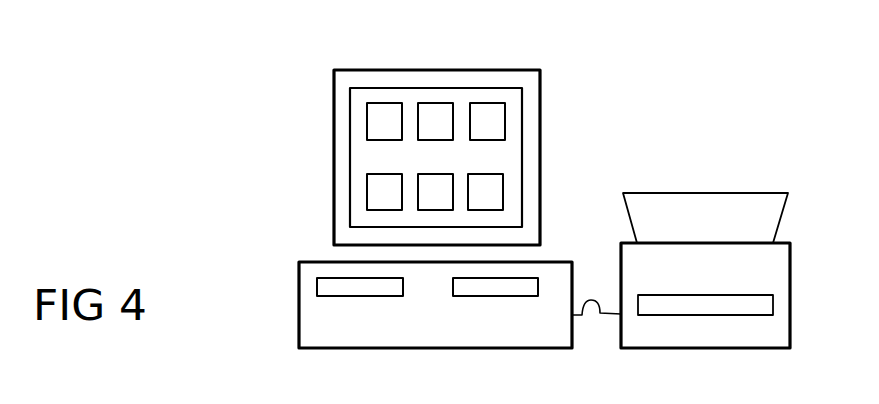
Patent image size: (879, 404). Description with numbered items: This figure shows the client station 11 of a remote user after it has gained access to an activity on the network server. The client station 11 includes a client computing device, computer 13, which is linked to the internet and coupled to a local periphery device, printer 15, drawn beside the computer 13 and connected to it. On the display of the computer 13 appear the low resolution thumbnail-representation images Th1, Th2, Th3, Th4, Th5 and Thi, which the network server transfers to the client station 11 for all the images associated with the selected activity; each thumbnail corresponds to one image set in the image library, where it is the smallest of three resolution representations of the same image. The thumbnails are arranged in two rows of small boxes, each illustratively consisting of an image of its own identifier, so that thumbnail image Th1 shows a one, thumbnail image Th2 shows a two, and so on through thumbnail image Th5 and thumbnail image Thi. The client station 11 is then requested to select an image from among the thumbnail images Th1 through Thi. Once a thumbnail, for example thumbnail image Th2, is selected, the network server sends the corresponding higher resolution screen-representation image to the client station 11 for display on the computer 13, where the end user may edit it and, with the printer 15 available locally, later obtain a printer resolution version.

The client station 11 is at (694, 99).
The computer 13 is at (313, 260).
The printer 15 is at (782, 243).
The thumbnail-representation file Th1 is at (385, 103).
The thumbnail image Th2 is at (437, 101).
The thumbnail image Th3 is at (487, 101).
The thumbnail image Th4 is at (367, 193).
The thumbnail image Th5 is at (420, 173).
The thumbnail image Thi is at (503, 189).